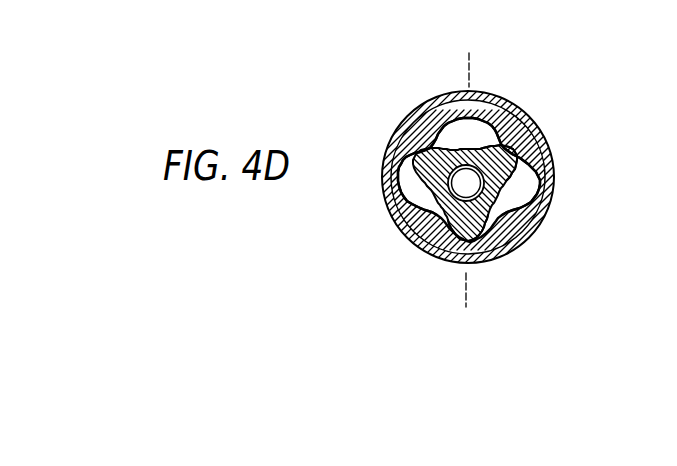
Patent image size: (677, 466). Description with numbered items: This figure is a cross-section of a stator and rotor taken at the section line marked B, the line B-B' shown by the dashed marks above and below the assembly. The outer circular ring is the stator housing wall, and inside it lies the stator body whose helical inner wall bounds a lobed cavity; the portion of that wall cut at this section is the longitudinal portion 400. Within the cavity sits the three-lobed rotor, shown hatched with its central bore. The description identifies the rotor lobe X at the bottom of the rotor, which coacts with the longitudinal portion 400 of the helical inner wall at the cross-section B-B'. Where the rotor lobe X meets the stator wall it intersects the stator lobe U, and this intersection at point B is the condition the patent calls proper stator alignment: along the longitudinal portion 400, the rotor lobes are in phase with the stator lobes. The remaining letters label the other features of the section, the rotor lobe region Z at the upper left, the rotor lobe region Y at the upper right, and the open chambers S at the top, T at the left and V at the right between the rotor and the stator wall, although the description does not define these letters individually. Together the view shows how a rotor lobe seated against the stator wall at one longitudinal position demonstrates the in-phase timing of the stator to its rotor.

The longitudinal portion of the helical inner wall 400 is at (467, 239).
The stator lobe U is at (437, 230).
The rotor Z is at (422, 167).
The rotor lobe contact point Y is at (503, 157).
The rotor lobe X is at (477, 220).
The top pumping chamber S is at (470, 120).
The left pumping chamber T is at (408, 178).
The right pumping chamber V is at (525, 178).
The point B (cross-section B-B') B is at (470, 68).